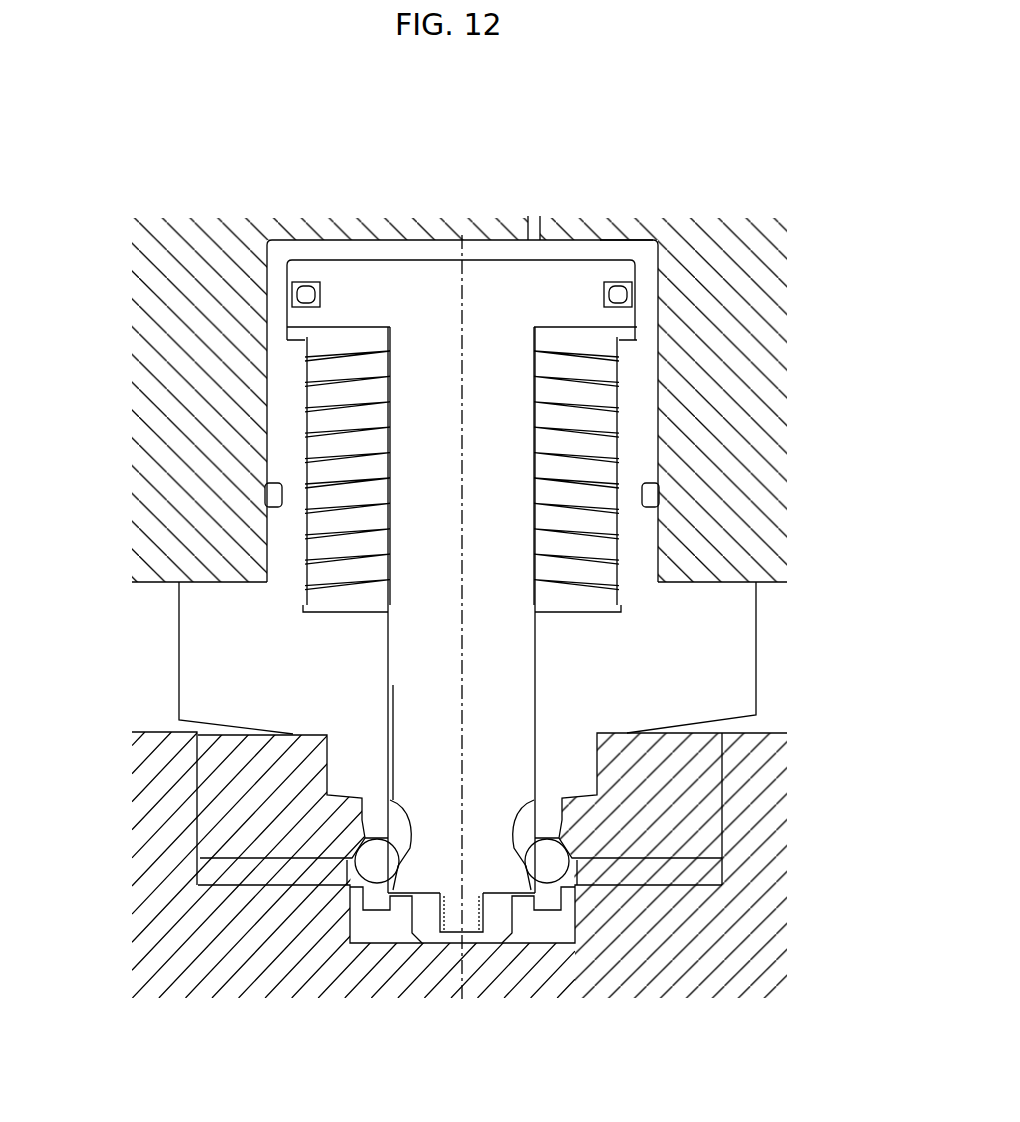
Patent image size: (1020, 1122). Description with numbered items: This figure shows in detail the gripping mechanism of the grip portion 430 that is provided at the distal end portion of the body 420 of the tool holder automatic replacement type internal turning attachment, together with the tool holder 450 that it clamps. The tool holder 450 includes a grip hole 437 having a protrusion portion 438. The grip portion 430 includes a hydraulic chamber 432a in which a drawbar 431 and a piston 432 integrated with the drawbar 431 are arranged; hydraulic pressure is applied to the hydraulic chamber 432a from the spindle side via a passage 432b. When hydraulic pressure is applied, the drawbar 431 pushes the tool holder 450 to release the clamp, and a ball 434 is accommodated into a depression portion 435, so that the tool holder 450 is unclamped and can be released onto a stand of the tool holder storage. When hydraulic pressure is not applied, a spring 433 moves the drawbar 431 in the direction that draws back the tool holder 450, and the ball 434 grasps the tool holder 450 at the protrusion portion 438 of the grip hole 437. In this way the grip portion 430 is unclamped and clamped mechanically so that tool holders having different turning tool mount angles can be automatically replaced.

The body 420 is at (747, 463).
The grip portion 430 is at (145, 664).
The drawbar 431 is at (507, 685).
The piston 432 is at (573, 280).
The hydraulic chamber 432a is at (625, 252).
The passage 432b is at (548, 235).
The spring 433 is at (605, 422).
The ball 434 is at (549, 864).
The depression portion 435 is at (537, 797).
The grip hole 437 is at (565, 937).
The protrusion portion 438 is at (567, 823).
The tool holder 450 is at (758, 803).